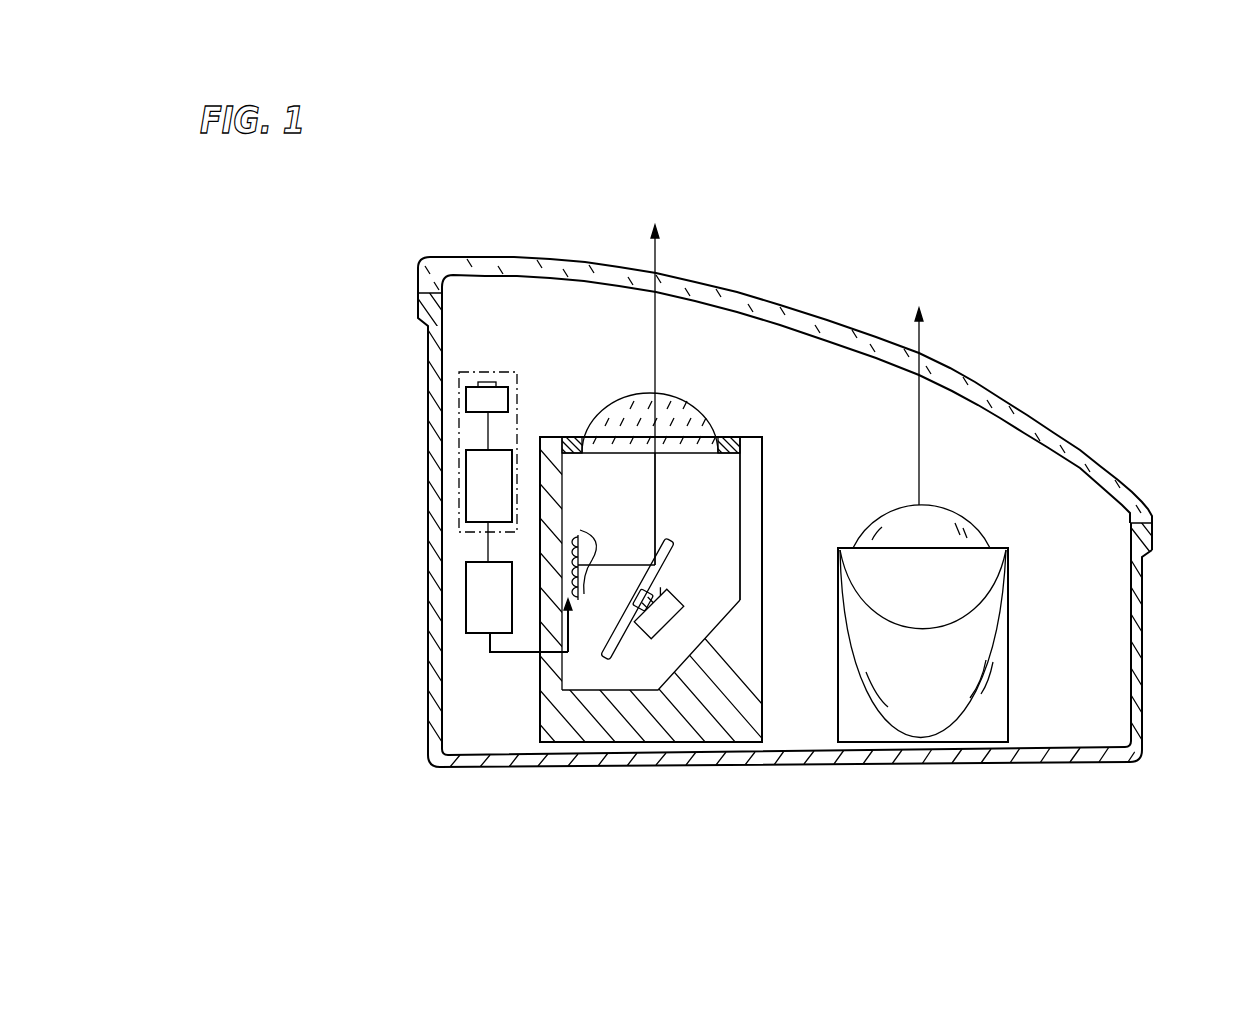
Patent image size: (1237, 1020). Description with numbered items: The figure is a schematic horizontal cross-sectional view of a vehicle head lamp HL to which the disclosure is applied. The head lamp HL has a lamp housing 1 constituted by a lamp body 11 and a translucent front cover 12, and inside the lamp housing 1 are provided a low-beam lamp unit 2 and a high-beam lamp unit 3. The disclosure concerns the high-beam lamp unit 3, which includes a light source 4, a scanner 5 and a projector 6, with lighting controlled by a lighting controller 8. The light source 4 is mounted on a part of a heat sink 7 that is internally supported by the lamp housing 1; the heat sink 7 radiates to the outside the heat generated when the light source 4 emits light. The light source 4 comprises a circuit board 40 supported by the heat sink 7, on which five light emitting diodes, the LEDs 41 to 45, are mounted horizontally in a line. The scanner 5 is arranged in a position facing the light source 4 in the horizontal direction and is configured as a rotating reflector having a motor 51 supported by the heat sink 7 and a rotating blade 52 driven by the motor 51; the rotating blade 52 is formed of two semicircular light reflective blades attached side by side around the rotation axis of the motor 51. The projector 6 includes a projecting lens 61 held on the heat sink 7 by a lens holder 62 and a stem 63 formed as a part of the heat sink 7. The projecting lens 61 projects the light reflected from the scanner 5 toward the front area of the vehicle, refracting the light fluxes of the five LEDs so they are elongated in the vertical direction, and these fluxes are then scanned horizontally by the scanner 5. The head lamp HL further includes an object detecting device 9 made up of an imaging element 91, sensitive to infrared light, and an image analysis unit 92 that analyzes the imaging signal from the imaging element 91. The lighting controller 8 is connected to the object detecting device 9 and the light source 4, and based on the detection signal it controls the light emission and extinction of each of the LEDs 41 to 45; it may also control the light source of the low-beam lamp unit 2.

The lamp housing 1 is at (1153, 589).
The lamp body 11 is at (1141, 700).
The translucent front cover 12 is at (1030, 420).
The low-beam lamp unit 2 is at (1015, 613).
The high-beam lamp unit 3 is at (787, 433).
The light source 4 is at (624, 500).
The circuit board 40 is at (576, 604).
The LED 41 is at (596, 541).
The LED 45 is at (614, 551).
The scanner 5 is at (722, 553).
The motor 51 is at (672, 600).
The rotating blade 52 is at (669, 547).
The projector 6 is at (597, 400).
The projecting lens 61 is at (685, 410).
The lens holder 62 is at (725, 440).
The stem 63 is at (752, 483).
The heat sink 7 is at (748, 672).
The lighting controller 8 is at (466, 599).
The object detecting device 9 is at (503, 370).
The imaging element 91 is at (470, 398).
The image analysis unit 92 is at (466, 486).
The head lamp HL is at (957, 318).